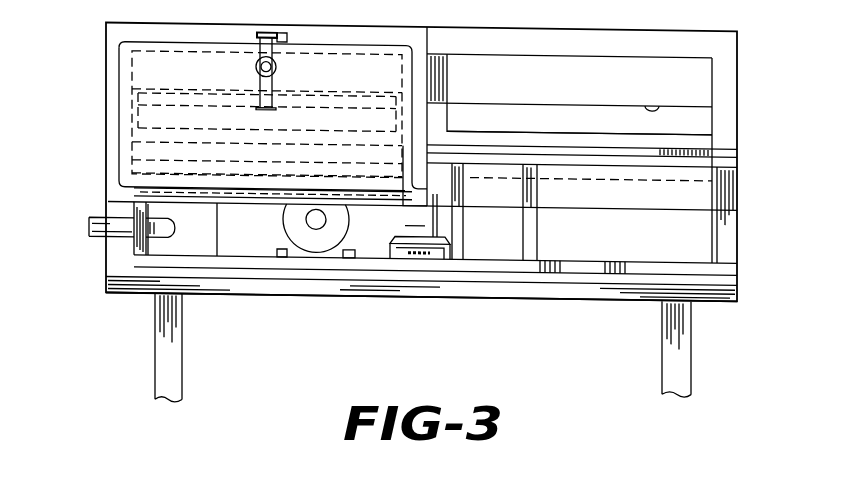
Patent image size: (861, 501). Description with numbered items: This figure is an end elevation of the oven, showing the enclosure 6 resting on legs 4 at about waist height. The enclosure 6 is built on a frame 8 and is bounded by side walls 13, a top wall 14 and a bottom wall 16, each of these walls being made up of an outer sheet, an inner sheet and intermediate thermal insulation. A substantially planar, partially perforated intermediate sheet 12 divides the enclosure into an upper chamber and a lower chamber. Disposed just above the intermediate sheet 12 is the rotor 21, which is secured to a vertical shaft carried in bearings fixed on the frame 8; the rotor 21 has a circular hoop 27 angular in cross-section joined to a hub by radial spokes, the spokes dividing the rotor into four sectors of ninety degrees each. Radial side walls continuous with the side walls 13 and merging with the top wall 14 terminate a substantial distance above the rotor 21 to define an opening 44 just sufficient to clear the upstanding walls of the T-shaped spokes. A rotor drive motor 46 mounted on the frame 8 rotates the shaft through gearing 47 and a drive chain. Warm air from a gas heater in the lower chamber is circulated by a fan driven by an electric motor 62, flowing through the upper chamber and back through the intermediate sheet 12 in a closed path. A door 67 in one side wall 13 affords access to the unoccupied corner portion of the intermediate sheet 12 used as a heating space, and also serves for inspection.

The enclosure 6 is at (742, 27).
The top wall 14 is at (655, 21).
The side walls 13 is at (112, 146).
The intermediate sheet 12 is at (738, 152).
The rotor 21 is at (462, 128).
The circular hoop 27 is at (588, 127).
The opening 44 is at (655, 98).
The door 67 is at (137, 67).
The frame 8 is at (325, 293).
The electric motor 62 is at (283, 218).
The rotor drive motor 46 is at (432, 211).
The gearing 47 is at (418, 251).
The bottom wall 16 is at (560, 290).
The legs 4 is at (158, 355).